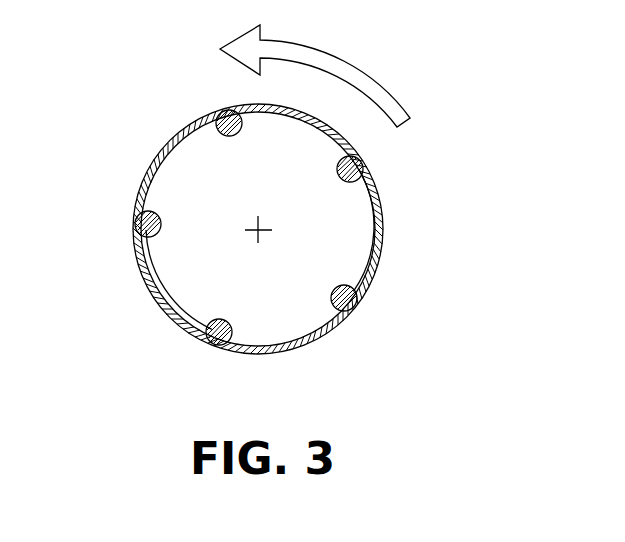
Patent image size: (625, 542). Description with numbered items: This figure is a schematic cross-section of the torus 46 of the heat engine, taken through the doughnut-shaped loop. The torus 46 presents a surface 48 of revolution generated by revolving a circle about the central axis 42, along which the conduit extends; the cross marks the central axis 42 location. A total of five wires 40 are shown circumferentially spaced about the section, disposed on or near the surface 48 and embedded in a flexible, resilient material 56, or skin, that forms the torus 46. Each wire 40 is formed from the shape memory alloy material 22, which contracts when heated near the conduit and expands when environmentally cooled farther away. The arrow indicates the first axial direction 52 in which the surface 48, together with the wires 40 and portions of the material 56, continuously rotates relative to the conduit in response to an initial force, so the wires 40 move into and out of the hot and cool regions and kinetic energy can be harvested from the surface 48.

The shape memory alloy material 22 is at (352, 303).
The wire 40 is at (205, 326).
The central axis 42 is at (263, 234).
The torus 46 is at (166, 118).
The surface 48 is at (138, 173).
The first axial direction 52 is at (342, 58).
The material 56 is at (258, 352).